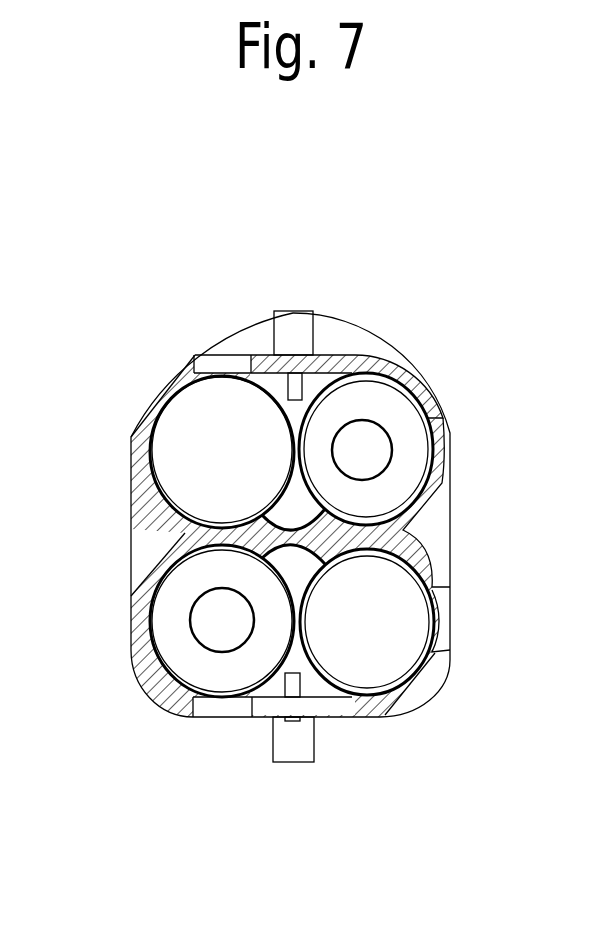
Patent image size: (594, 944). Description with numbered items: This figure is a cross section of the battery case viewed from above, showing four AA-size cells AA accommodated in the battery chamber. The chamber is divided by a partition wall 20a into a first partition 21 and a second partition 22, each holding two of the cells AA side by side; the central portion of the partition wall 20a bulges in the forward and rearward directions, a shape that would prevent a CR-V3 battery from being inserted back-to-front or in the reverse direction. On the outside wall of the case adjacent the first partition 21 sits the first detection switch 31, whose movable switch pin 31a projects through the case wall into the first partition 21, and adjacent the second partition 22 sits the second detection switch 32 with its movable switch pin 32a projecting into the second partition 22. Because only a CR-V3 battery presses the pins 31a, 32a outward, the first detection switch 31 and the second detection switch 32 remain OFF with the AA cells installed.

The partition wall 20a is at (291, 523).
The first partition 21 is at (170, 660).
The second partition 22 is at (154, 444).
The first detection switch 31 is at (294, 745).
The movable switch pin 31a is at (283, 688).
The second detection switch 32 is at (292, 328).
The movable switch pin 32a is at (297, 386).
The AA-size cell AA is at (197, 400).